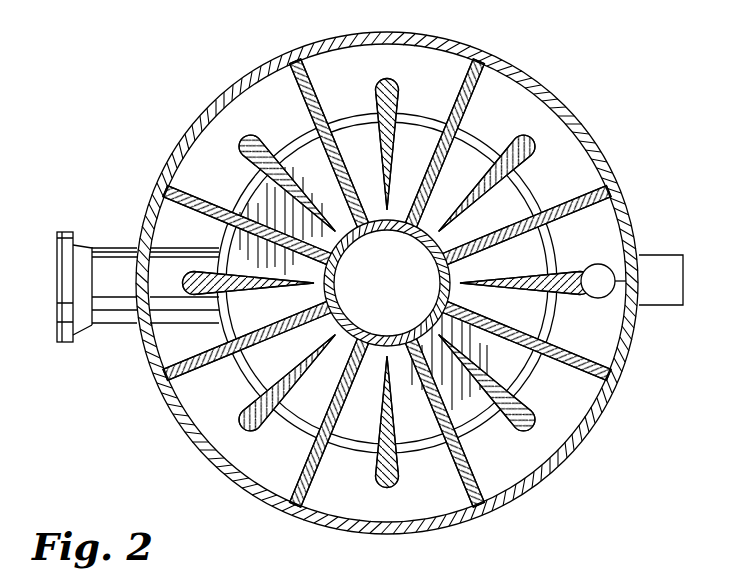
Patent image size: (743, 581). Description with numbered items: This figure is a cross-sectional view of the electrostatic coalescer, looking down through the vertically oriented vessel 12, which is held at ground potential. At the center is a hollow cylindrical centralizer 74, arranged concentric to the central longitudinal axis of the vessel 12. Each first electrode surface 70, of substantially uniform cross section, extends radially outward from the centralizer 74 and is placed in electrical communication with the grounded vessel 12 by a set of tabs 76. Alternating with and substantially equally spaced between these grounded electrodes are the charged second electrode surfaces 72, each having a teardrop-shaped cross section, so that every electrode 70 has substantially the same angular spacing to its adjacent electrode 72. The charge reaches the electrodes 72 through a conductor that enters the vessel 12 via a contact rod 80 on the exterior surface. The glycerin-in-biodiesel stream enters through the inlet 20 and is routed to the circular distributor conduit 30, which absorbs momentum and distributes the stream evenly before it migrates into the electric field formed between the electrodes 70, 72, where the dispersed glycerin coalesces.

The vessel 12 is at (184, 137).
The inlet 20 is at (82, 272).
The distributor conduit 30 is at (278, 148).
The first electrode surface 70 is at (198, 353).
The second electrode surface 72 is at (398, 92).
The centralizer 74 is at (466, 428).
The tabs 76 is at (283, 57).
The contact rod 80 is at (603, 280).